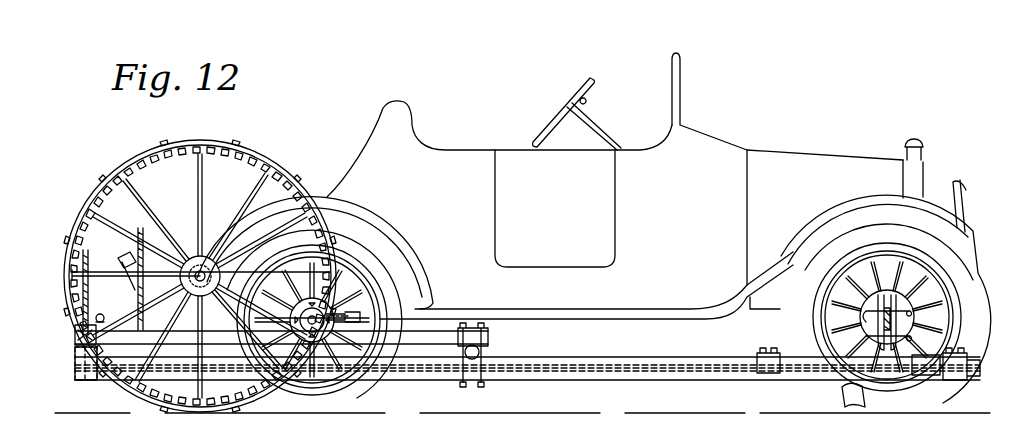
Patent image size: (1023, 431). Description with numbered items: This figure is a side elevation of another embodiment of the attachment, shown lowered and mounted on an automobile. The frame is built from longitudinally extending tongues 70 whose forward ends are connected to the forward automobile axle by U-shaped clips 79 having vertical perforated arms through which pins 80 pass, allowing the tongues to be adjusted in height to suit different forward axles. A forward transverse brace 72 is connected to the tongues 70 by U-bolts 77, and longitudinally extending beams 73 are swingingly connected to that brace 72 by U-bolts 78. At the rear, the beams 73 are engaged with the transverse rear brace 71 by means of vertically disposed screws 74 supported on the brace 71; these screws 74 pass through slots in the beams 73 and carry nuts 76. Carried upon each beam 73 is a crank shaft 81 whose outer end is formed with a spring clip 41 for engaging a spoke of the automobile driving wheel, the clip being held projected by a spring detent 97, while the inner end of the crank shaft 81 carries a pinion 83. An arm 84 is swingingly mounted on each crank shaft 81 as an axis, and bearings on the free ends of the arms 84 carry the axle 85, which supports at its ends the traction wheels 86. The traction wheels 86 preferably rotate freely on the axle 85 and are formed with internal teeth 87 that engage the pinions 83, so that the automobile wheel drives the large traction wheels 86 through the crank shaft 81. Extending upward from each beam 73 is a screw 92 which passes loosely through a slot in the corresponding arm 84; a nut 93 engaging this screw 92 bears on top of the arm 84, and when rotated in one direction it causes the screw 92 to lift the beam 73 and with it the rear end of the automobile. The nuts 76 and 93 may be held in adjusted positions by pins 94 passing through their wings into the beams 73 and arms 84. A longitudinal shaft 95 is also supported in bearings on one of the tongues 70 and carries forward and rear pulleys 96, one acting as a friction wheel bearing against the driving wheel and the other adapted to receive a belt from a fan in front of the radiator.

The spring clip 41 is at (342, 318).
The tongues 70 is at (662, 358).
The transverse rear brace 71 is at (76, 358).
The forward transverse brace 72 is at (480, 348).
The longitudinal beams 73 is at (430, 340).
The screws 74 is at (76, 285).
The nuts 76 is at (76, 333).
The U-bolts 77 is at (482, 384).
The U-bolts 78 is at (483, 328).
The U-shaped clips 79 is at (897, 325).
The pins 80 is at (866, 320).
The crank shaft 81 is at (383, 257).
The pinion 83 is at (340, 310).
The arm 84 is at (166, 265).
The axle 85 is at (220, 262).
The traction wheels 86 is at (252, 150).
The internal teeth 87 is at (296, 180).
The screw 92 is at (139, 228).
The nut 93 is at (124, 262).
The pins 94 is at (157, 205).
The longitudinal shaft 95 is at (727, 373).
The pulleys 96 is at (928, 375).
The spring detent 97 is at (340, 304).